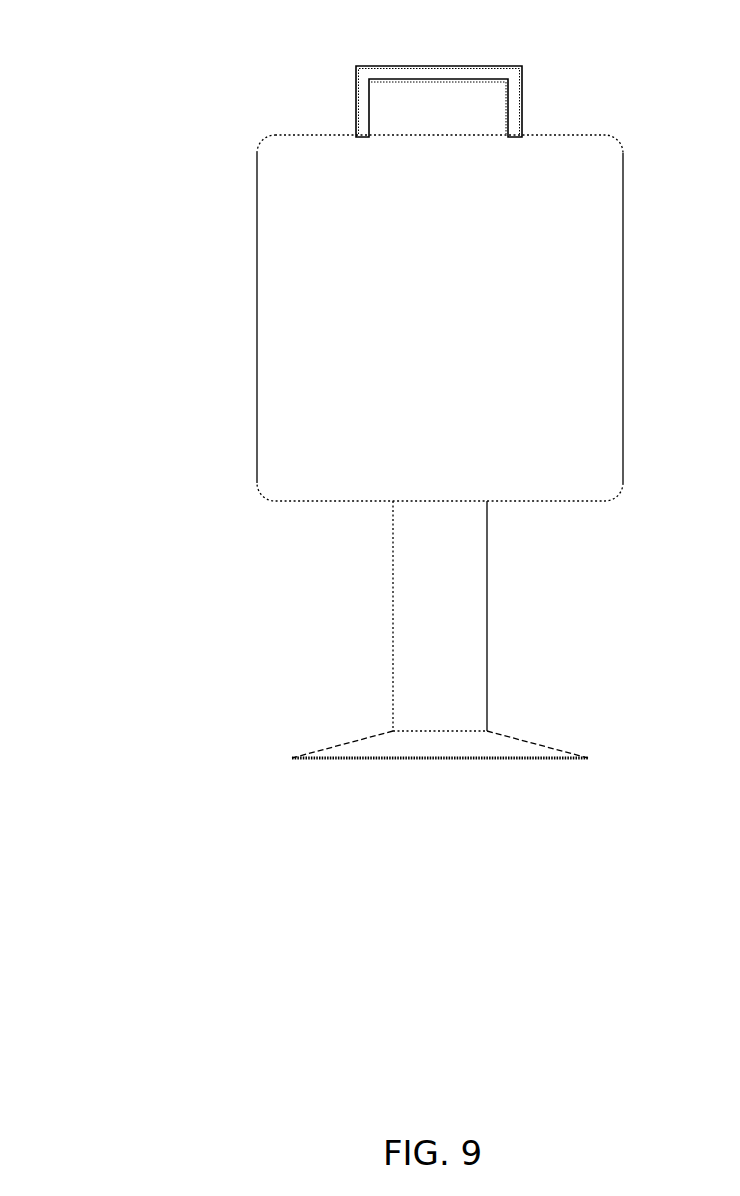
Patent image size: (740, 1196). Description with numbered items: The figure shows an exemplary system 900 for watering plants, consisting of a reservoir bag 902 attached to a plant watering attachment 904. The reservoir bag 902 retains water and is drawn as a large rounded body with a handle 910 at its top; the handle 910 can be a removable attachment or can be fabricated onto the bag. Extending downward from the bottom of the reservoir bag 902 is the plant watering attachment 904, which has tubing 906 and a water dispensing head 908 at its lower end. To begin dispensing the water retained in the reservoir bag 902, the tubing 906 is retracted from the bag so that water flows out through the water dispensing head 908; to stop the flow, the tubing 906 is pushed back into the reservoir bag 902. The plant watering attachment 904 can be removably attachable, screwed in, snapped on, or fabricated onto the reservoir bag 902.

The system 900 is at (115, 898).
The reservoir bag 902 is at (283, 502).
The plant watering attachment 904 is at (487, 592).
The tubing 906 is at (450, 637).
The water dispensing head 908 is at (300, 758).
The handle 910 is at (356, 100).